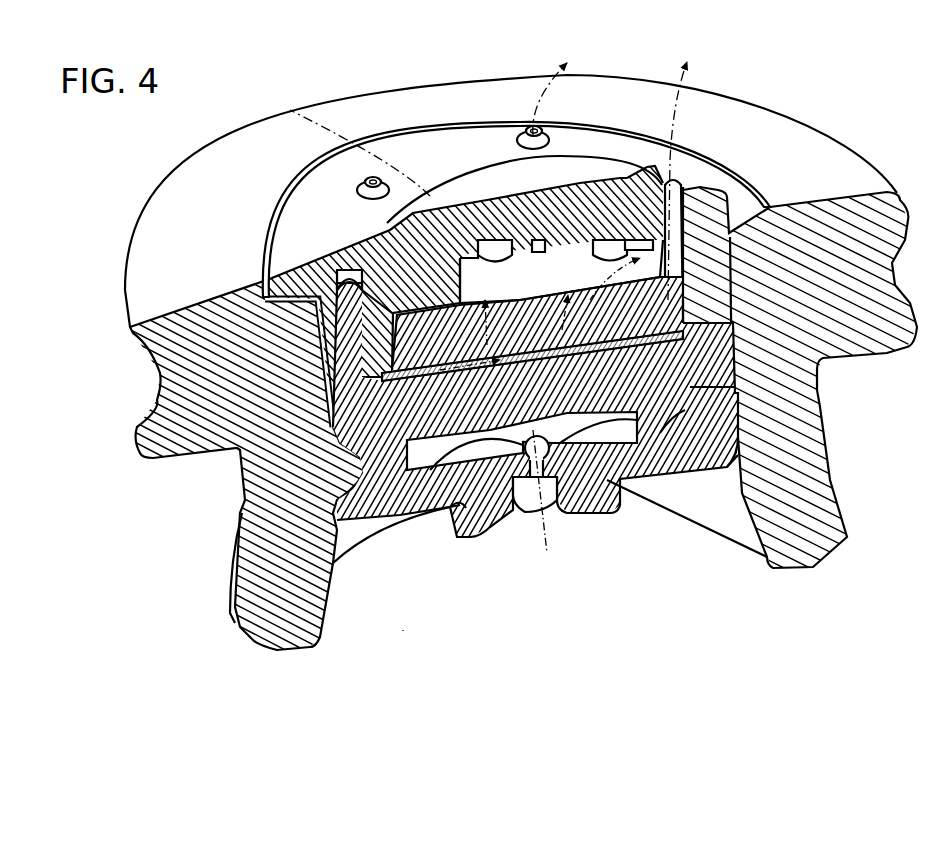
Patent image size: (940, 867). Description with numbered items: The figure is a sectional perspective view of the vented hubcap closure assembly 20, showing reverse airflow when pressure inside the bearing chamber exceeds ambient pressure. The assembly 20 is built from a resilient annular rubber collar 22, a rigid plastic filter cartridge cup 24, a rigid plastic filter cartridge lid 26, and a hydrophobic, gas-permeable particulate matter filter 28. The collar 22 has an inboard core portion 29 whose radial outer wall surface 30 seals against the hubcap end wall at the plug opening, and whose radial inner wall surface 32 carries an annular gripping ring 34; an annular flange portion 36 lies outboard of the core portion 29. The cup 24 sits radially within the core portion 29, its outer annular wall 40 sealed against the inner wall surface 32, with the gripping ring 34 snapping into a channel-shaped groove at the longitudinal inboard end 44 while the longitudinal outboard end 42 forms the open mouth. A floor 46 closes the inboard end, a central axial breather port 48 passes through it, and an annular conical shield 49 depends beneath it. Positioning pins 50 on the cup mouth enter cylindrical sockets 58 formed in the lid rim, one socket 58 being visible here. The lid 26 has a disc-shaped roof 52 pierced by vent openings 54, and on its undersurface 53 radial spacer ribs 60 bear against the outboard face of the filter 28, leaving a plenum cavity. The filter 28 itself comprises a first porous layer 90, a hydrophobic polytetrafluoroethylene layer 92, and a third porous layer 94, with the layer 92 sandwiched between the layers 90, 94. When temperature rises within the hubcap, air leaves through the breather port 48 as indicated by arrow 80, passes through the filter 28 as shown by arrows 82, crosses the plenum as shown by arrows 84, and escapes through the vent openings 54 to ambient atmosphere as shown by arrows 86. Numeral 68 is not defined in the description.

The hubcap breather assembly 20 is at (403, 630).
The annular rubber collar 22 is at (112, 350).
The filter cartridge cup 24 is at (378, 525).
The filter cartridge lid 26 is at (425, 150).
The particulate matter filter 28 is at (673, 267).
The core portion 29 is at (838, 448).
The radial outer wall surface 30 is at (799, 377).
The radial inner wall surface 32 is at (737, 477).
The gripping ring 34 is at (666, 435).
The annular flange portion 36 is at (835, 158).
The outer annular wall 40 is at (320, 427).
The longitudinal outboard end 42 is at (320, 352).
The longitudinal inboard end 44 is at (358, 466).
The floor 46 is at (648, 480).
The central axial breather port 48 is at (483, 452).
The annular conical shield 49 is at (453, 515).
The positioning pins 50 is at (330, 317).
The roof 52 is at (610, 143).
The undersurface 53 is at (510, 240).
The vent openings 54 is at (372, 178).
The sockets 58 is at (322, 260).
The spacer ribs 60 is at (490, 250).
The slot 68 is at (543, 247).
The directional arrow 80 is at (540, 546).
The directional arrows 82 is at (483, 400).
The directional arrows 84 is at (458, 282).
The directional arrows 86 is at (292, 108).
The first porous layer 90 is at (686, 280).
The hydrophobic layer 92 is at (692, 317).
The third porous layer 94 is at (718, 375).